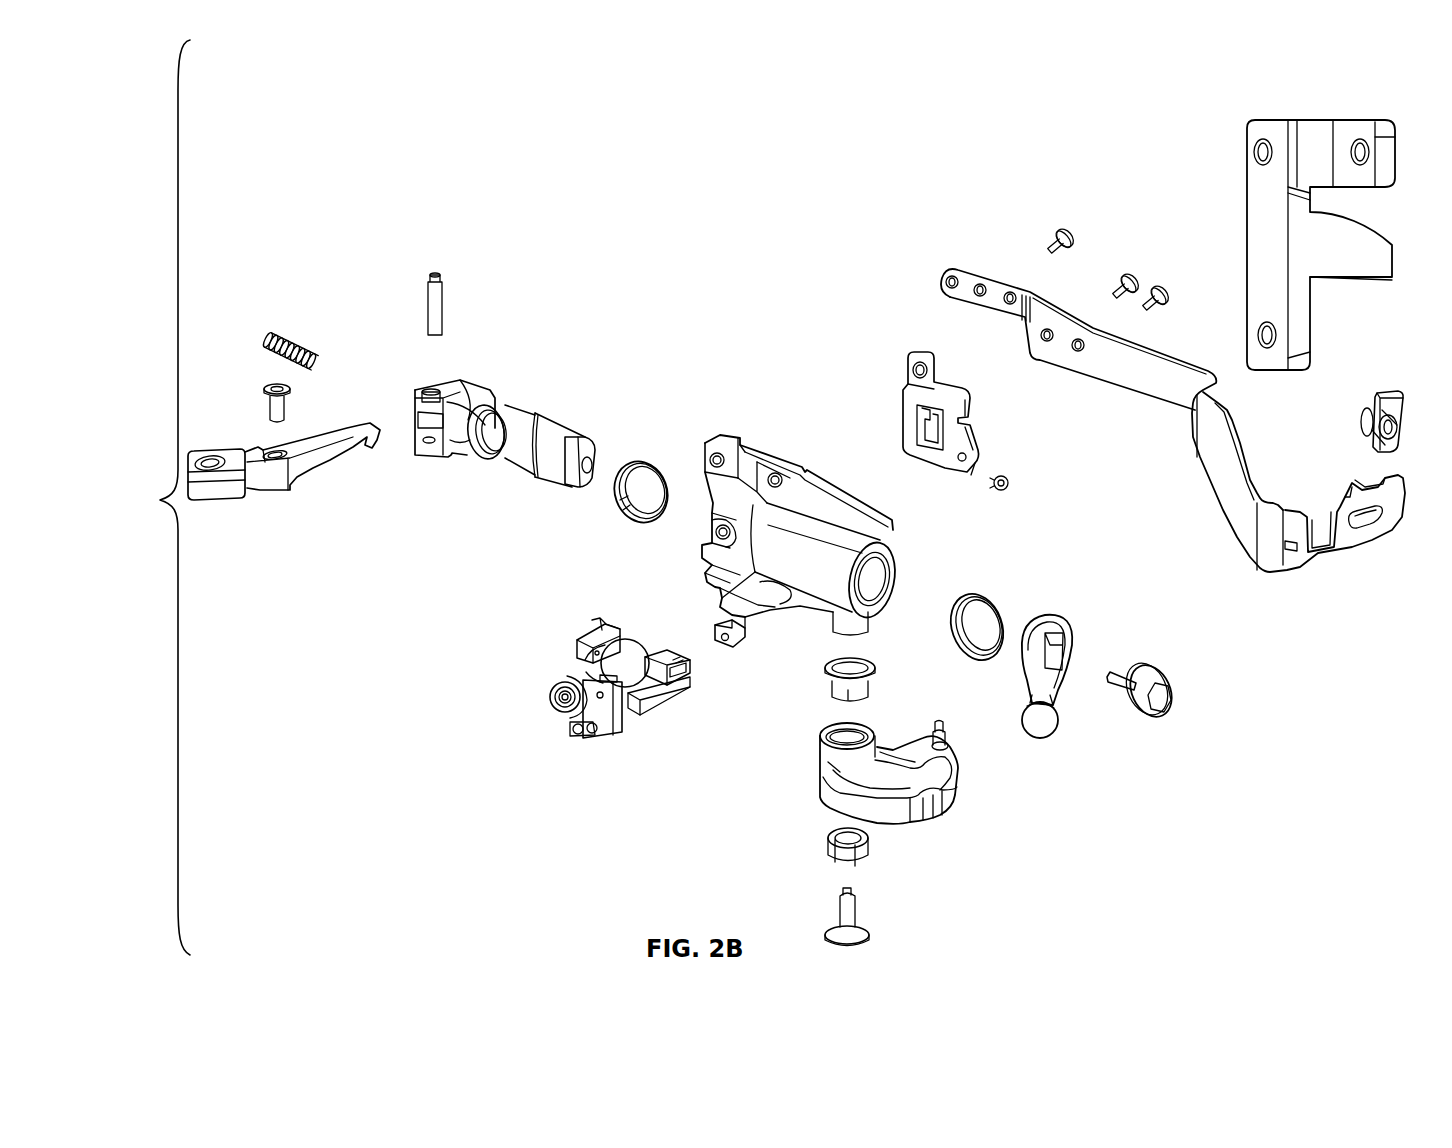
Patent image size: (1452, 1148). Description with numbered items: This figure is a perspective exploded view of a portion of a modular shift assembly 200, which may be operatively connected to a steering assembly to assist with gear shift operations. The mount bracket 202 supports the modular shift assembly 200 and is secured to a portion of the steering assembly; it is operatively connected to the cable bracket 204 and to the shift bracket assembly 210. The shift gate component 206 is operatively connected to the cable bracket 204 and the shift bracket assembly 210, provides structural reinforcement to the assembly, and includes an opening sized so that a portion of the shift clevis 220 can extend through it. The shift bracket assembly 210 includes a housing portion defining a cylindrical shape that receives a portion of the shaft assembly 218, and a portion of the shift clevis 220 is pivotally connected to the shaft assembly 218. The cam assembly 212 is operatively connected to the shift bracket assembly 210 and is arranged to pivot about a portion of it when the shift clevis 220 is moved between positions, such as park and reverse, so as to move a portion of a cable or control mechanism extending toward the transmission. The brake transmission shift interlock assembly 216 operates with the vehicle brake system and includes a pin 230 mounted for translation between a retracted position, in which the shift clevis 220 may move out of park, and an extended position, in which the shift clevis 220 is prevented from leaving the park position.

The modular shift assembly 200 is at (1102, 84).
The mount bracket 202 is at (1238, 125).
The cable bracket 204 is at (1122, 405).
The shift gate component 206 is at (908, 348).
The shift bracket assembly 210 is at (782, 443).
The cam assembly 212 is at (945, 830).
The brake transmission shift interlock (BTSI) assembly 216 is at (568, 640).
The shaft assembly 218 is at (465, 468).
The shift clevis 220 is at (212, 515).
The pin 230 is at (560, 718).